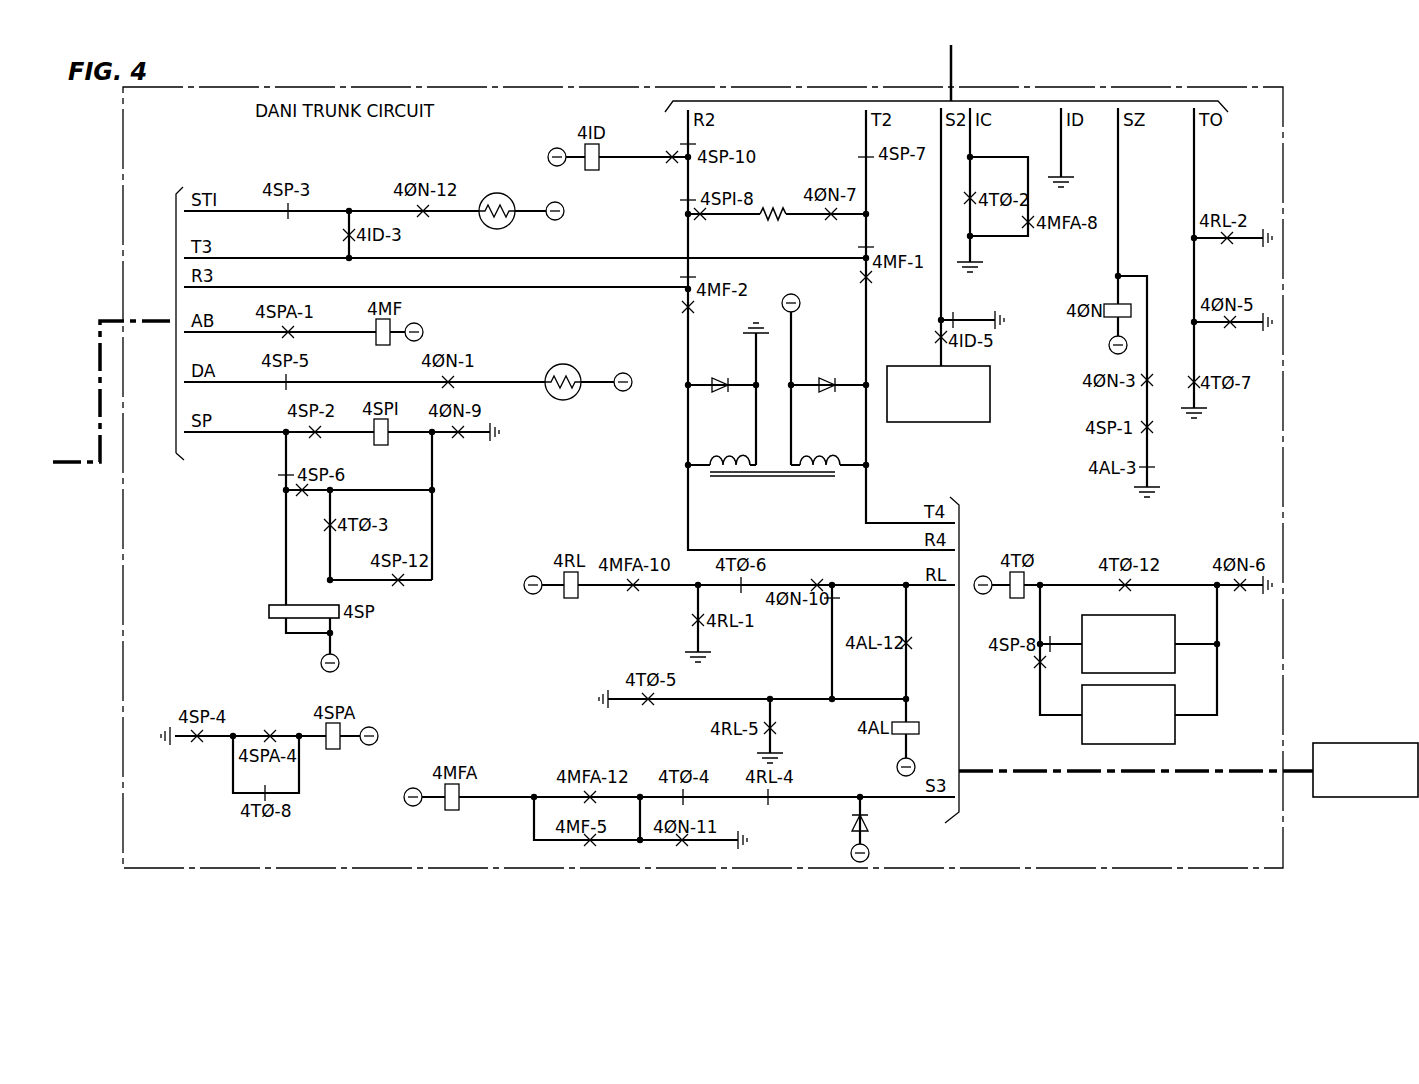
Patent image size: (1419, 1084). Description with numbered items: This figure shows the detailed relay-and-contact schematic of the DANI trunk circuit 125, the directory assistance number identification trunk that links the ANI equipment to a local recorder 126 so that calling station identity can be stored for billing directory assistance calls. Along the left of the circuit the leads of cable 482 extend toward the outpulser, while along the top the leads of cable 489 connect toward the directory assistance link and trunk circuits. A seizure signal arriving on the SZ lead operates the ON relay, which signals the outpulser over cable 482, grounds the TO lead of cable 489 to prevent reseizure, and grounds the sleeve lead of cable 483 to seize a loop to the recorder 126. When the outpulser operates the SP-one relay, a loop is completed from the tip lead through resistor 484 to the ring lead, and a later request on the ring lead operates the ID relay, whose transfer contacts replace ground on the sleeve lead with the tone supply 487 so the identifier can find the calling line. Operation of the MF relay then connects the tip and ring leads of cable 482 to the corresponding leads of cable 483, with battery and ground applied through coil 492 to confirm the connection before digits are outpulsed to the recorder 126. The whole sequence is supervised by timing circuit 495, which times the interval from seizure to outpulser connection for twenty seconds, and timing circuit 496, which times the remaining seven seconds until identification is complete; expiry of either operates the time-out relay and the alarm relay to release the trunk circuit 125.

The DANI trunk circuit 125 is at (123, 186).
The recorder 126 is at (1372, 743).
The cable 482 is at (114, 379).
The cable 483 is at (1136, 757).
The resistor 484 is at (774, 225).
The tone supply 487 is at (950, 423).
The cable 489 is at (954, 90).
The coil 492 is at (772, 478).
The timing circuit 495 is at (1135, 615).
The timing circuit 496 is at (1175, 731).